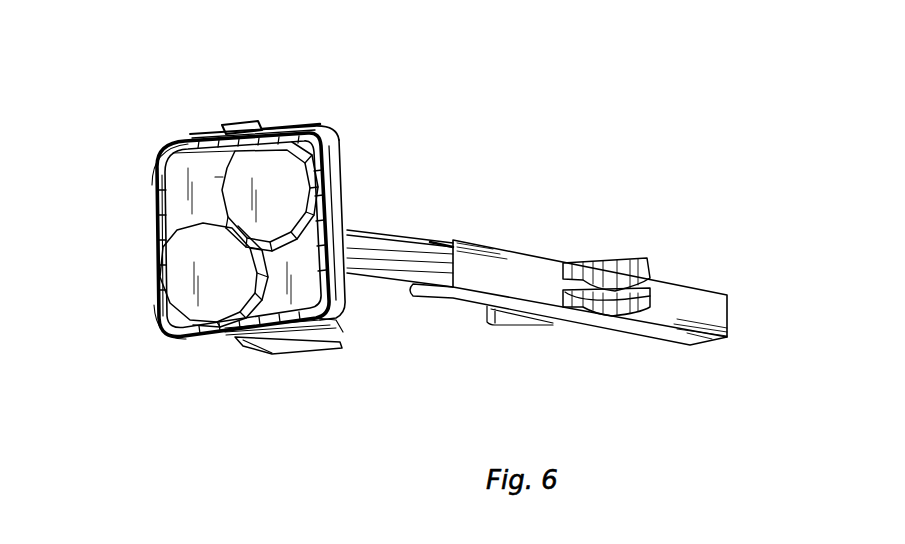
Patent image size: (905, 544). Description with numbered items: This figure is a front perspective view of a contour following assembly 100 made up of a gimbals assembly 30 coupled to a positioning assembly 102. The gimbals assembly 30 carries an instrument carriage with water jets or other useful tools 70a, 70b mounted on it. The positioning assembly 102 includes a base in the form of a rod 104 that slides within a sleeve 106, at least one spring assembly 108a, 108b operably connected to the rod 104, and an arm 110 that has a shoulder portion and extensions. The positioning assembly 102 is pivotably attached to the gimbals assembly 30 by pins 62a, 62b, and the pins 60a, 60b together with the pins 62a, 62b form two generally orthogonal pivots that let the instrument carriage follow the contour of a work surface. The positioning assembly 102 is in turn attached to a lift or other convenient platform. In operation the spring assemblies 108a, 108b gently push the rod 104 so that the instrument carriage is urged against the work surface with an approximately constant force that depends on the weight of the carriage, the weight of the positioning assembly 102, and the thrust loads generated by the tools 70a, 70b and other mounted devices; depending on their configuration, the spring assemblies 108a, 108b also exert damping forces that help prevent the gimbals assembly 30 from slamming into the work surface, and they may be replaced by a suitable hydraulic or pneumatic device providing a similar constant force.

The gimbals assembly 30 is at (334, 142).
The pin 60a is at (167, 245).
The pin 60b is at (347, 222).
The pin 62a is at (226, 125).
The pin 62b is at (253, 350).
The water jet 70a is at (152, 166).
The water jet 70b is at (167, 336).
The contour following assembly 100 is at (497, 165).
The positioning assembly 102 is at (596, 322).
The rod 104 is at (400, 287).
The sleeve 106 is at (700, 288).
The spring assembly 108a is at (616, 260).
The spring assembly 108b is at (634, 318).
The arm 110 is at (339, 323).